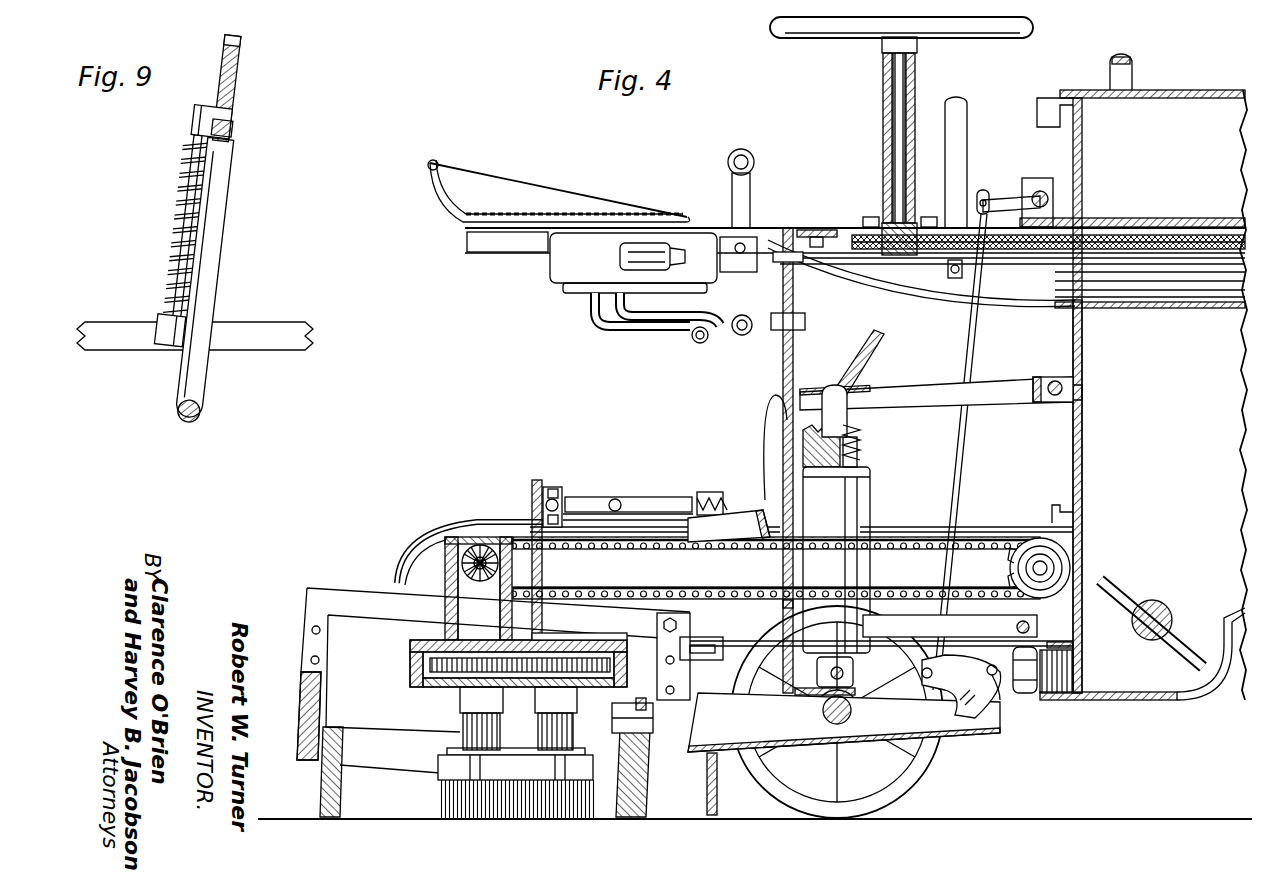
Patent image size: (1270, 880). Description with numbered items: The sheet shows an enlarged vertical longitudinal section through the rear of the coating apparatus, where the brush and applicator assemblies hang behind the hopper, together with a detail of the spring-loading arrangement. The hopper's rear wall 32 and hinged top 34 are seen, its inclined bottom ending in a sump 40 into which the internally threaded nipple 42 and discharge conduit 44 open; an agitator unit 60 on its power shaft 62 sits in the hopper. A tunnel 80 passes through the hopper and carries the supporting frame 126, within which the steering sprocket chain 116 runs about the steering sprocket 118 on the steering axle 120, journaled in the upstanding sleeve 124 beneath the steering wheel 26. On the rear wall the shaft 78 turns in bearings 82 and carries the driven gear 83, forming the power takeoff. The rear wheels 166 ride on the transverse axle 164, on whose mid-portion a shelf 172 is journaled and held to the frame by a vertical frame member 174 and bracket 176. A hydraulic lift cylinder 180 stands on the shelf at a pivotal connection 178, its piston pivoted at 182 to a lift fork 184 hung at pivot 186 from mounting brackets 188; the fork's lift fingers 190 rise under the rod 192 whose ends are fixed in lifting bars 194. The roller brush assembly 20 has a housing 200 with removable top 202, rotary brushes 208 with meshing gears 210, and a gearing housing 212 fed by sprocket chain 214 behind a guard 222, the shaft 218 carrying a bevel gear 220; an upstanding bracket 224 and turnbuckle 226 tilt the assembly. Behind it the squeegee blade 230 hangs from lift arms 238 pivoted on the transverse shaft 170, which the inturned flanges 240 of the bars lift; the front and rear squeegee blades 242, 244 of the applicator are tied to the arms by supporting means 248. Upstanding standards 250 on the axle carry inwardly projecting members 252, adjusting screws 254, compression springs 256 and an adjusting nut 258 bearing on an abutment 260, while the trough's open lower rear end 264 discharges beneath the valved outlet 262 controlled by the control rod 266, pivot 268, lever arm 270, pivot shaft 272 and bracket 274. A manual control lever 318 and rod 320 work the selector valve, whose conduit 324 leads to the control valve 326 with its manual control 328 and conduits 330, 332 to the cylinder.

In FIG. 4, the roller brush assembly 20 is at (487, 679).
In FIG. 4, the steering wheel 26 is at (812, 38).
In FIG. 4, the rear wall 32 is at (1082, 448).
In FIG. 4, the top or closure 34 is at (1132, 92).
In FIG. 4, the sump or pocket 40 is at (1142, 654).
In FIG. 4, the internally threaded nipple 42 is at (1062, 695).
In FIG. 4, the discharge conduit 44 is at (1030, 694).
In FIG. 4, the agitator unit 60 is at (1165, 600).
In FIG. 4, the power shaft 62 is at (1140, 632).
In FIG. 4, the shaft 78 is at (1040, 560).
In FIG. 4, the tunnel or conduit 80 is at (1127, 218).
In FIG. 4, the bearings 82 is at (1063, 506).
In FIG. 4, the driven gear 83 is at (1018, 570).
In FIG. 4, the sprocket chain 116 is at (1197, 235).
In FIG. 4, the steering sprocket 118 is at (905, 272).
In FIG. 4, the steering axle 120 is at (897, 90).
In FIG. 4, the upstanding sleeve 124 is at (912, 97).
In FIG. 4, the supporting frame 126 is at (490, 237).
In FIG. 9, the transverse axle 164 is at (202, 420).
In FIG. 4, the transverse axle 164 is at (852, 712).
In FIG. 4, the rear supporting wheels 166 is at (912, 755).
In FIG. 4, the transverse shaft 170 is at (1015, 627).
In FIG. 4, the support bracket or shelf 172 is at (844, 722).
In FIG. 4, the vertical frame member 174 is at (783, 362).
In FIG. 4, the bracket 176 is at (805, 230).
In FIG. 4, the pivotal connection 178 is at (887, 610).
In FIG. 4, the hydraulic lift cylinder 180 is at (852, 507).
In FIG. 4, the pivotal connection 182 is at (845, 408).
In FIG. 4, the lift fork 184 is at (935, 398).
In FIG. 4, the pivot 186 is at (1050, 380).
In FIG. 4, the mounting brackets 188 is at (1078, 393).
In FIG. 4, the lift fingers 190 is at (747, 518).
In FIG. 4, the transversely extending rod 192 is at (710, 492).
In FIG. 4, the lifting bars 194 is at (707, 600).
In FIG. 4, the brush housing 200 is at (413, 678).
In FIG. 4, the removable top 202 is at (430, 641).
In FIG. 4, the rotary brushes 208 is at (455, 767).
In FIG. 4, the gears 210 is at (460, 672).
In FIG. 4, the gearing assembly housing 212 is at (457, 563).
In FIG. 4, the sprocket chain 214 is at (593, 540).
In FIG. 4, the shaft 218 is at (490, 553).
In FIG. 4, the bevel gear 220 is at (485, 583).
In FIG. 4, the shield or guard enclosure 222 is at (462, 523).
In FIG. 4, the upstanding bracket 224 is at (538, 548).
In FIG. 4, the adjustable turnbuckle 226 is at (648, 500).
In FIG. 4, the vertical squeegee blade construction 230 is at (310, 748).
In FIG. 9, the lift arms 238 is at (250, 330).
In FIG. 4, the lift arms 238 is at (340, 605).
In FIG. 4, the inturned flanges 240 is at (706, 663).
In FIG. 4, the front squeegee blade construction 242 is at (717, 800).
In FIG. 4, the rear squeegee blade construction 244 is at (640, 797).
In FIG. 4, the supporting means 248 is at (663, 667).
In FIG. 9, the upstanding standards 250 is at (207, 250).
In FIG. 9, the laterally inwardly projecting members 252 is at (203, 115).
In FIG. 9, the adjusting screws 254 is at (237, 62).
In FIG. 9, the compression springs 256 is at (185, 193).
In FIG. 9, the adjusting nut 258 is at (228, 126).
In FIG. 9, the abutment 260 is at (150, 320).
In FIG. 4, the abutment 260 is at (993, 740).
In FIG. 4, the valved outlet 262 is at (1000, 700).
In FIG. 4, the open lower rear end of trough 264 is at (703, 730).
In FIG. 4, the control rod 266 is at (952, 478).
In FIG. 4, the pivot 268 is at (983, 190).
In FIG. 4, the lever arm 270 is at (1012, 196).
In FIG. 4, the pivot shaft 272 is at (1040, 191).
In FIG. 4, the bracket 274 is at (1045, 206).
In FIG. 4, the manual control lever 318 is at (968, 118).
In FIG. 4, the rod 320 is at (1197, 268).
In FIG. 4, the conduit 324 is at (935, 300).
In FIG. 4, the control valve 326 is at (568, 263).
In FIG. 4, the manual control means 328 is at (746, 205).
In FIG. 4, the conduit 330 is at (668, 336).
In FIG. 4, the conduit 332 is at (736, 338).